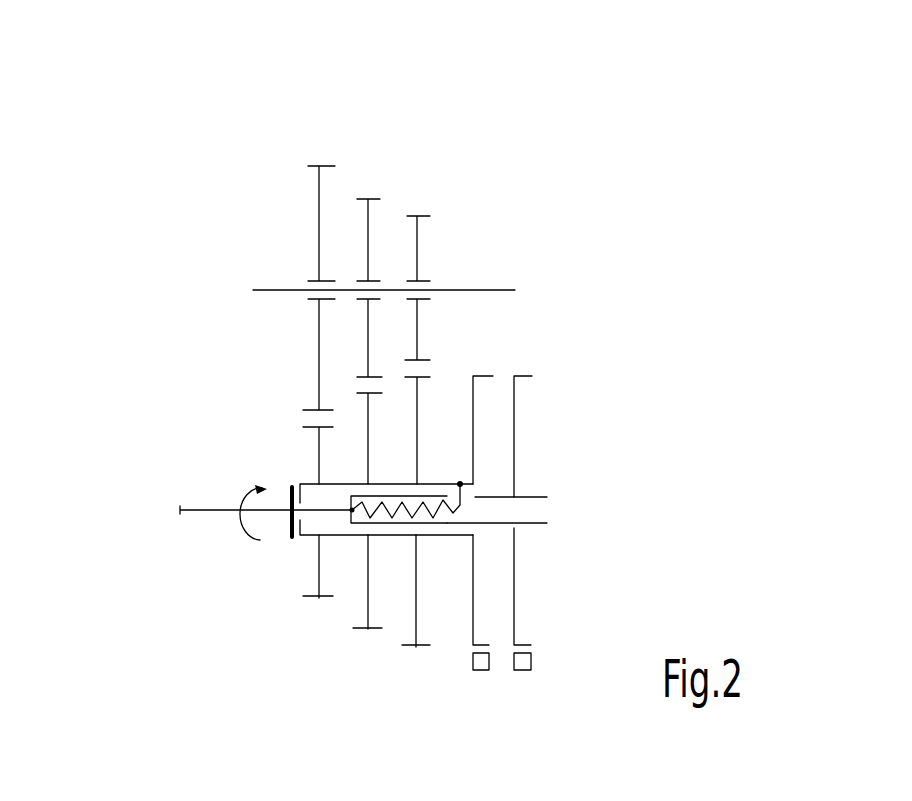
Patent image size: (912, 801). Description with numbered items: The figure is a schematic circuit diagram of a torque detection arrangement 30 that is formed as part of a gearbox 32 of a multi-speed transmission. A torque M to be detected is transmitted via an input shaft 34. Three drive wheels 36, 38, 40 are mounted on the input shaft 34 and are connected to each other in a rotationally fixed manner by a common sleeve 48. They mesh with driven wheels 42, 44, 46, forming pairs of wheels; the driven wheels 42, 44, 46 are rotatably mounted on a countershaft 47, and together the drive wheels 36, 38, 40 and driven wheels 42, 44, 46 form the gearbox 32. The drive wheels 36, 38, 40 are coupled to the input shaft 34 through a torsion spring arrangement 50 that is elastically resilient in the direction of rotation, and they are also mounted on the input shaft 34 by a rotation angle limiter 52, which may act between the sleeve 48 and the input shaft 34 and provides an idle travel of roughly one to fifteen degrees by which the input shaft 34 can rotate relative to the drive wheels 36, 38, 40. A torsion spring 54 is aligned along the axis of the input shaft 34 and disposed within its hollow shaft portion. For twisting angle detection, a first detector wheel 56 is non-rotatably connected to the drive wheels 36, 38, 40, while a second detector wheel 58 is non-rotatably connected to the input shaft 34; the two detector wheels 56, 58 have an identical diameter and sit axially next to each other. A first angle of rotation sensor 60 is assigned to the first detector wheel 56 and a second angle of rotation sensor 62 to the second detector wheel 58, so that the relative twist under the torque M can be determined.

The torque detection arrangement 30 is at (607, 437).
The gearbox 32 is at (586, 177).
The input shaft 34 is at (200, 510).
The drive wheel 36 is at (318, 598).
The drive wheel 38 is at (368, 629).
The drive wheel 40 is at (415, 648).
The driven wheel 42 is at (319, 166).
The driven wheel 44 is at (368, 199).
The driven wheel 46 is at (417, 216).
The countershaft 47 is at (467, 290).
The common sleeve 48 is at (350, 536).
The torsion spring arrangement 50 is at (401, 489).
The rotation angle limiter 52 is at (293, 487).
The torsion spring 54 is at (427, 507).
The first detector wheel 56 is at (488, 374).
The second detector wheel 58 is at (520, 376).
The first angle of rotation sensor 60 is at (481, 671).
The second angle of rotation sensor 62 is at (527, 660).
The torque M is at (258, 541).